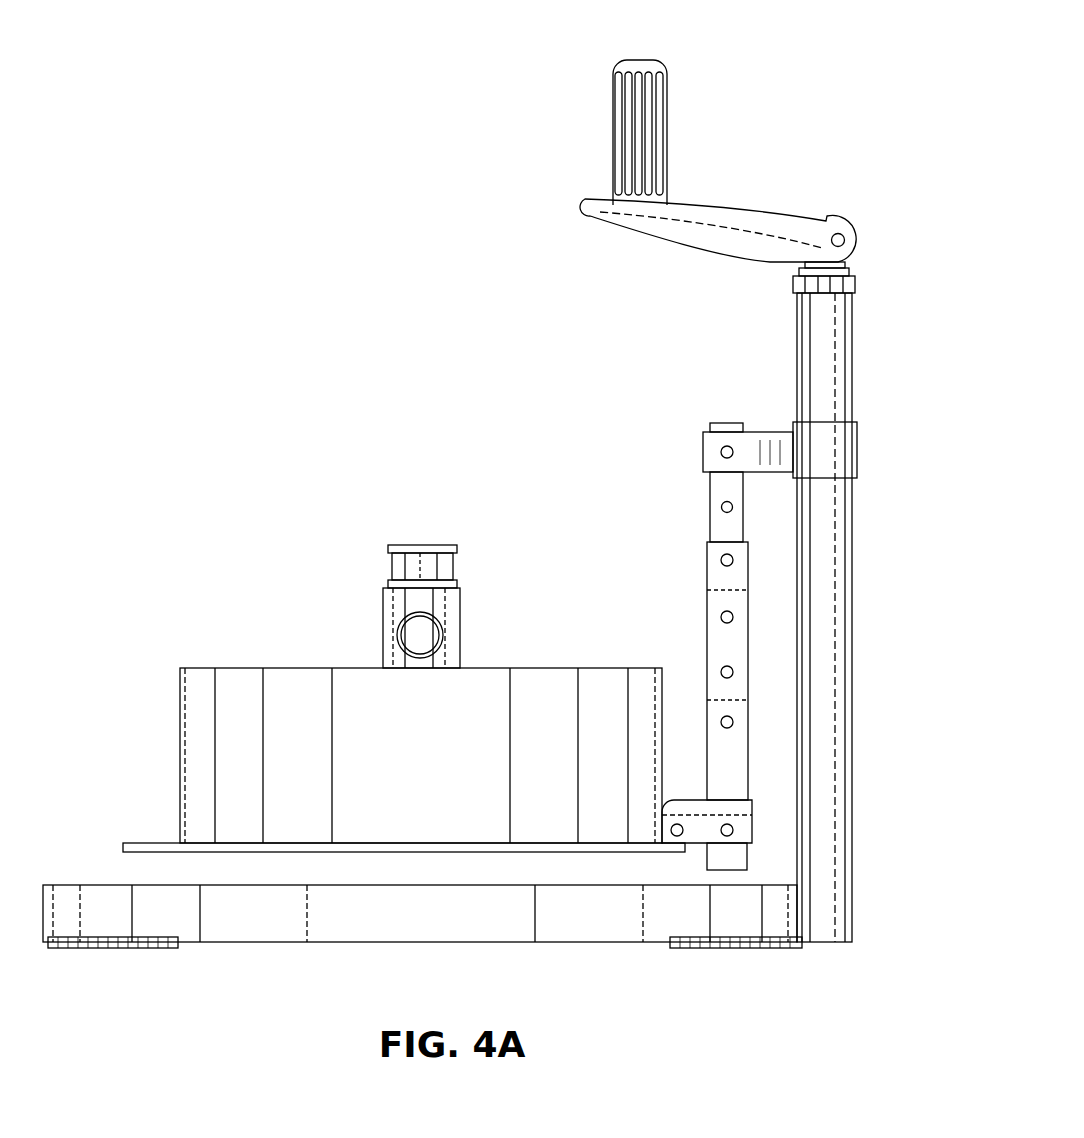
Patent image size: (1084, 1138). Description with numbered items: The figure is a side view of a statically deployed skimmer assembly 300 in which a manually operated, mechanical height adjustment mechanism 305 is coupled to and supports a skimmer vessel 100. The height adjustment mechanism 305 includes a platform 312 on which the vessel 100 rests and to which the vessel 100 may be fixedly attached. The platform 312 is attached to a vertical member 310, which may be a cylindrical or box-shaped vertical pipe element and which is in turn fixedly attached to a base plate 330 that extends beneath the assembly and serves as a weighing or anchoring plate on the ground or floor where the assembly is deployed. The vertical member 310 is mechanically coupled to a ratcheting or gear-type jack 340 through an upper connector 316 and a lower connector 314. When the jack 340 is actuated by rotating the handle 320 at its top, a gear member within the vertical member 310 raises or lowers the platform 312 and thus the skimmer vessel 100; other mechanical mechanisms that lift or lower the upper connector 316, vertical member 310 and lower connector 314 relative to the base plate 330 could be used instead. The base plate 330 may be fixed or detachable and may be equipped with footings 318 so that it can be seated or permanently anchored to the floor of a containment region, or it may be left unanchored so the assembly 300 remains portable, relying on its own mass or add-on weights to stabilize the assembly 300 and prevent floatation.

The skimmer vessel 100 is at (205, 668).
The statically deployed assembly 300 is at (503, 506).
The height adjustment mechanism 305 is at (905, 228).
The vertical member 310 is at (705, 560).
The platform 312 is at (165, 843).
The lower connector 314 is at (753, 810).
The upper connector 316 is at (752, 438).
The footings 318 is at (88, 948).
The handle 320 is at (668, 100).
The base plate 330 is at (368, 948).
The jack 340 is at (852, 655).